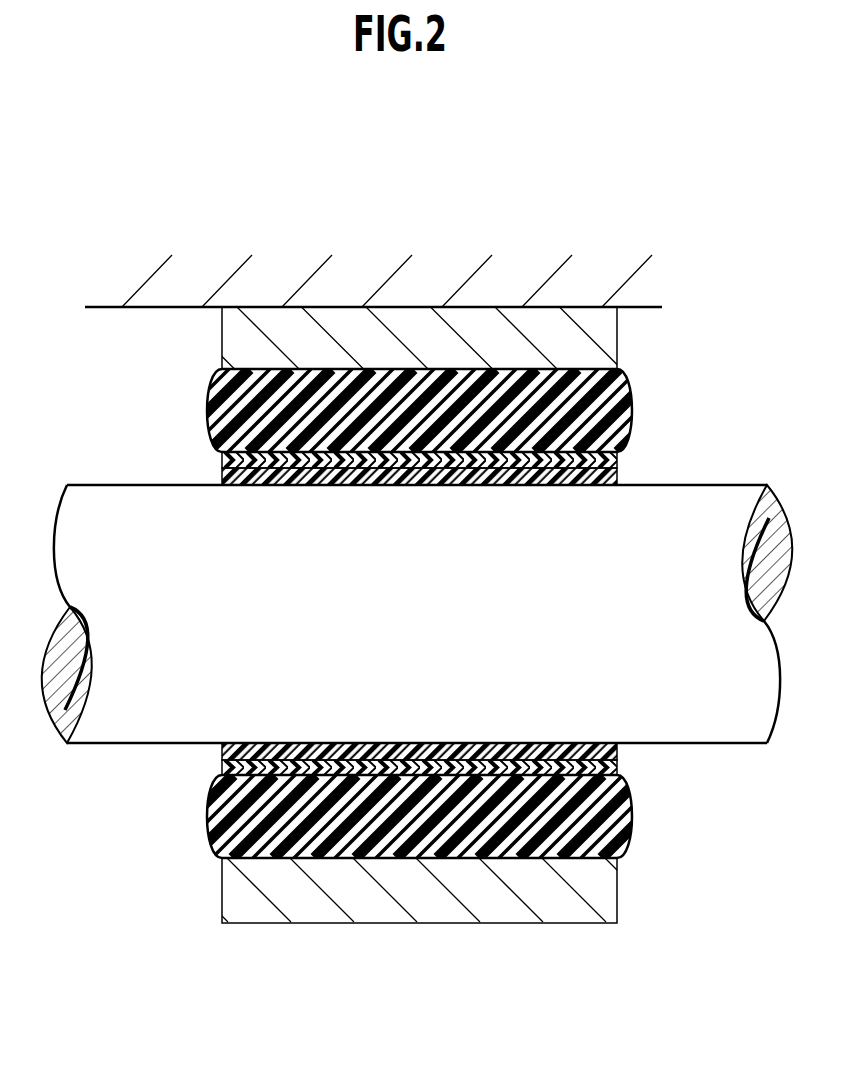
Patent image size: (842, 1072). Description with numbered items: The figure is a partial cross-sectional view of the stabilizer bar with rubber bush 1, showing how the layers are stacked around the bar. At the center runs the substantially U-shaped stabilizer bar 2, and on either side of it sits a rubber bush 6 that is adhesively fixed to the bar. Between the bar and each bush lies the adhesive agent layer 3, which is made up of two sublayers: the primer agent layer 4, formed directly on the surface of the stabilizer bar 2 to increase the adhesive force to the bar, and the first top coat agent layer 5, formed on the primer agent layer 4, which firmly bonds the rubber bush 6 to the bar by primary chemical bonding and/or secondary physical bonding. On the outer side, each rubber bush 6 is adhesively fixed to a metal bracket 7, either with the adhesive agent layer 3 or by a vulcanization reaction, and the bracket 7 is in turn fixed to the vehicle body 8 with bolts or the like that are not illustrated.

The stabilizer bar with rubber bush 1 is at (384, 615).
The stabilizer bar 2 is at (147, 508).
The adhesive agent layer 3 is at (476, 615).
The primer agent layer 4 is at (612, 480).
The first top coat agent layer 5 is at (612, 460).
The rubber bush 6 is at (620, 406).
The bracket 7 is at (603, 336).
The vehicle body 8 is at (640, 307).